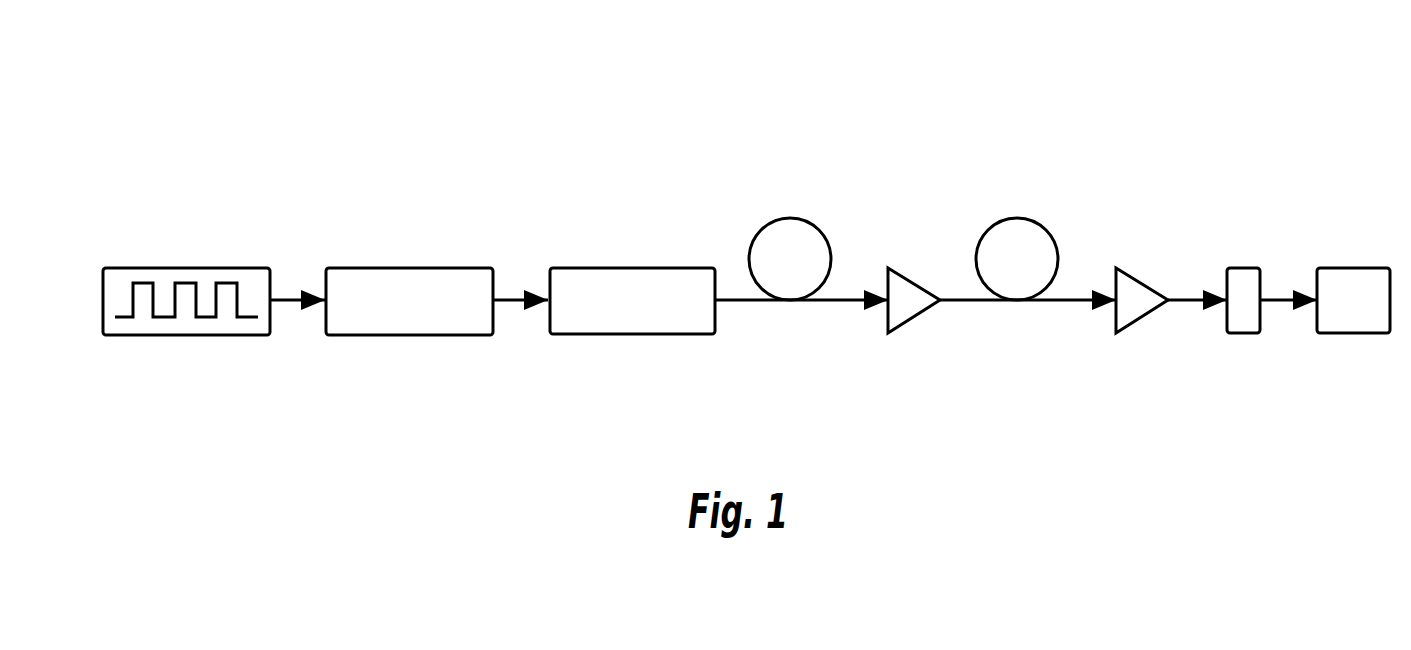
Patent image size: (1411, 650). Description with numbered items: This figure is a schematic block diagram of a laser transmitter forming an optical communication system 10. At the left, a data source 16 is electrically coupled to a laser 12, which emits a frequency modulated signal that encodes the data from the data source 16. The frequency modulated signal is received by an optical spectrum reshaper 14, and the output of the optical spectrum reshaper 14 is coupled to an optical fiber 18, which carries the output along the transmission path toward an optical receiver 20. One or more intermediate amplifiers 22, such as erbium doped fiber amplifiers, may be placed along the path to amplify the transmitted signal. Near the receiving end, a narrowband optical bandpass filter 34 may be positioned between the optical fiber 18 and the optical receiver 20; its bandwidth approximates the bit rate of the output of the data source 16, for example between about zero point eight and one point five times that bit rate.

The optical communication system 10 is at (922, 112).
The data source 16 is at (187, 268).
The laser 12 is at (407, 268).
The optical spectrum reshaper 14 is at (633, 268).
The optical fiber 18 is at (790, 218).
The intermediate amplifier 22 is at (888, 268).
The narrowband optical bandpass filter 34 is at (1243, 268).
The optical receiver 20 is at (1352, 268).